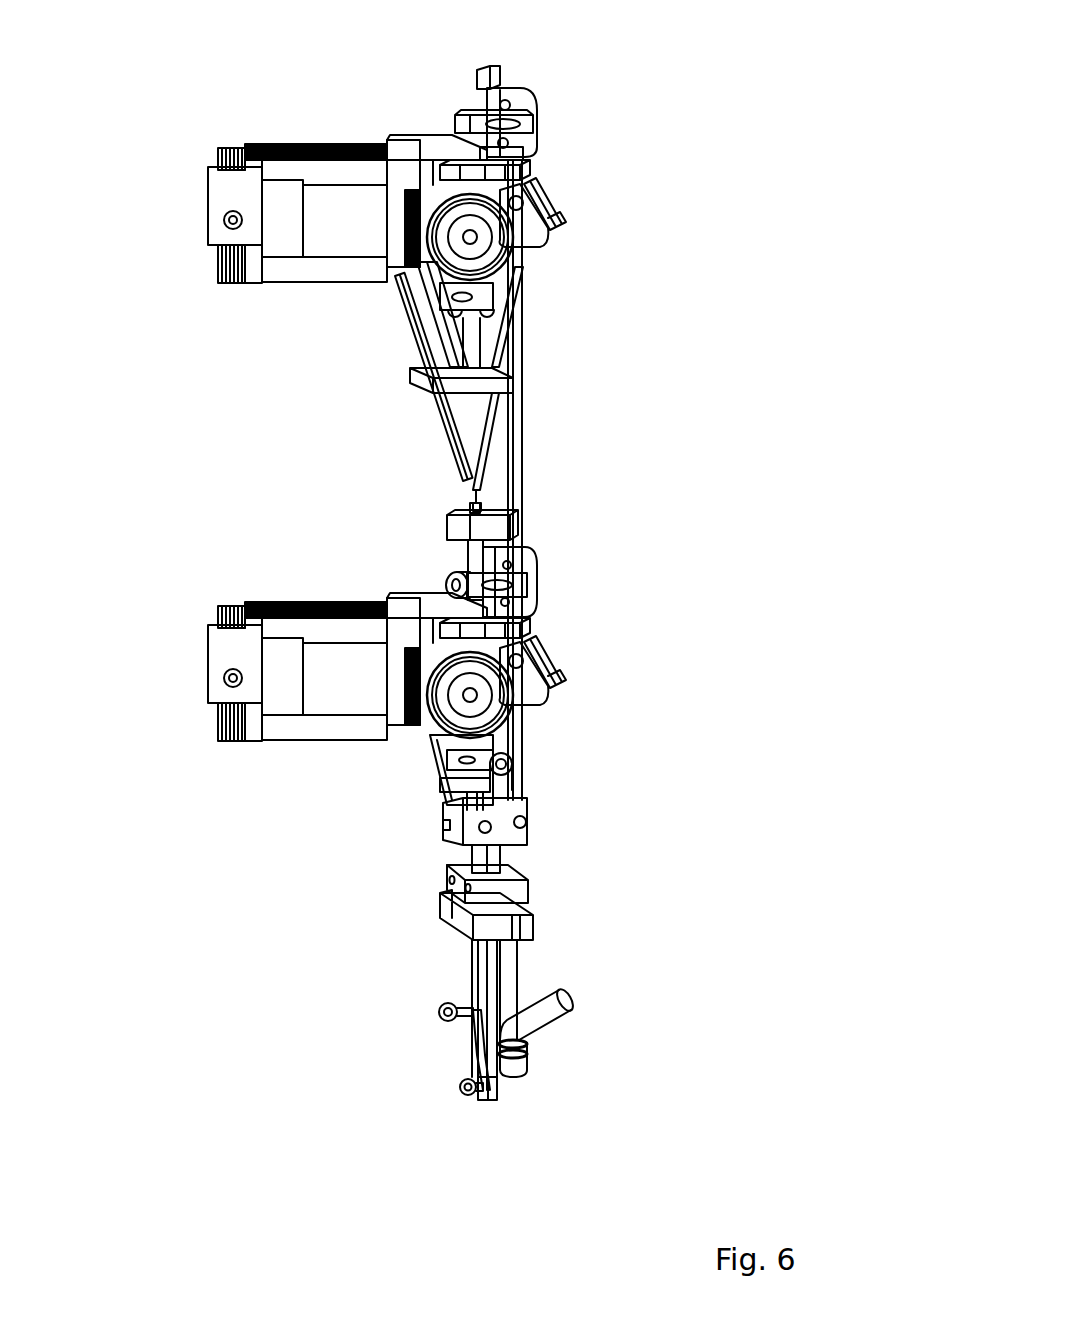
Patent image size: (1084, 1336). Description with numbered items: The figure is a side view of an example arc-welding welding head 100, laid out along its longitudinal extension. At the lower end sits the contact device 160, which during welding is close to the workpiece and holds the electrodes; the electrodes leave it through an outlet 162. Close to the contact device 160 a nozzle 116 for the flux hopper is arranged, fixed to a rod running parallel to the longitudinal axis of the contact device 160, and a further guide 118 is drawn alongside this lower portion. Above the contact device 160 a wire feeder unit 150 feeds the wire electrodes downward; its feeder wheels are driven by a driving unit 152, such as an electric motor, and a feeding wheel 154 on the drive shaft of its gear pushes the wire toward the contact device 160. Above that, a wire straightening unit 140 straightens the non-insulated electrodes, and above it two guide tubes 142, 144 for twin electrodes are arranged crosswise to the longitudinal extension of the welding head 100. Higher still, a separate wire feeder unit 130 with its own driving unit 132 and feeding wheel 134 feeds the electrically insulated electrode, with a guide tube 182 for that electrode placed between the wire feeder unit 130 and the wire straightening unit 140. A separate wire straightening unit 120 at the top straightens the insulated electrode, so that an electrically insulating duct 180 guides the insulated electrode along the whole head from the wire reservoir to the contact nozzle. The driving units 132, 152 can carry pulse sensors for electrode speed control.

The arc-welding welding head 100 is at (509, 603).
The nozzle 116 is at (550, 1020).
The guide rail 118 is at (512, 965).
The wire straightening unit 120 is at (530, 88).
The wire feeder unit 130 is at (553, 247).
The driving unit 132 is at (332, 172).
The feeding wheel 134 is at (496, 228).
The wire straightening unit 140 is at (457, 578).
The guide tube 142 is at (413, 335).
The guide tube 144 is at (432, 408).
The wire feeder unit 150 is at (560, 700).
The driving unit 152 is at (258, 605).
The feeding wheel 154 is at (478, 698).
The contact device 160 is at (397, 303).
The outlet 162 is at (485, 1110).
The electrically insulating duct 180 is at (477, 498).
The guide tube 182 is at (513, 432).